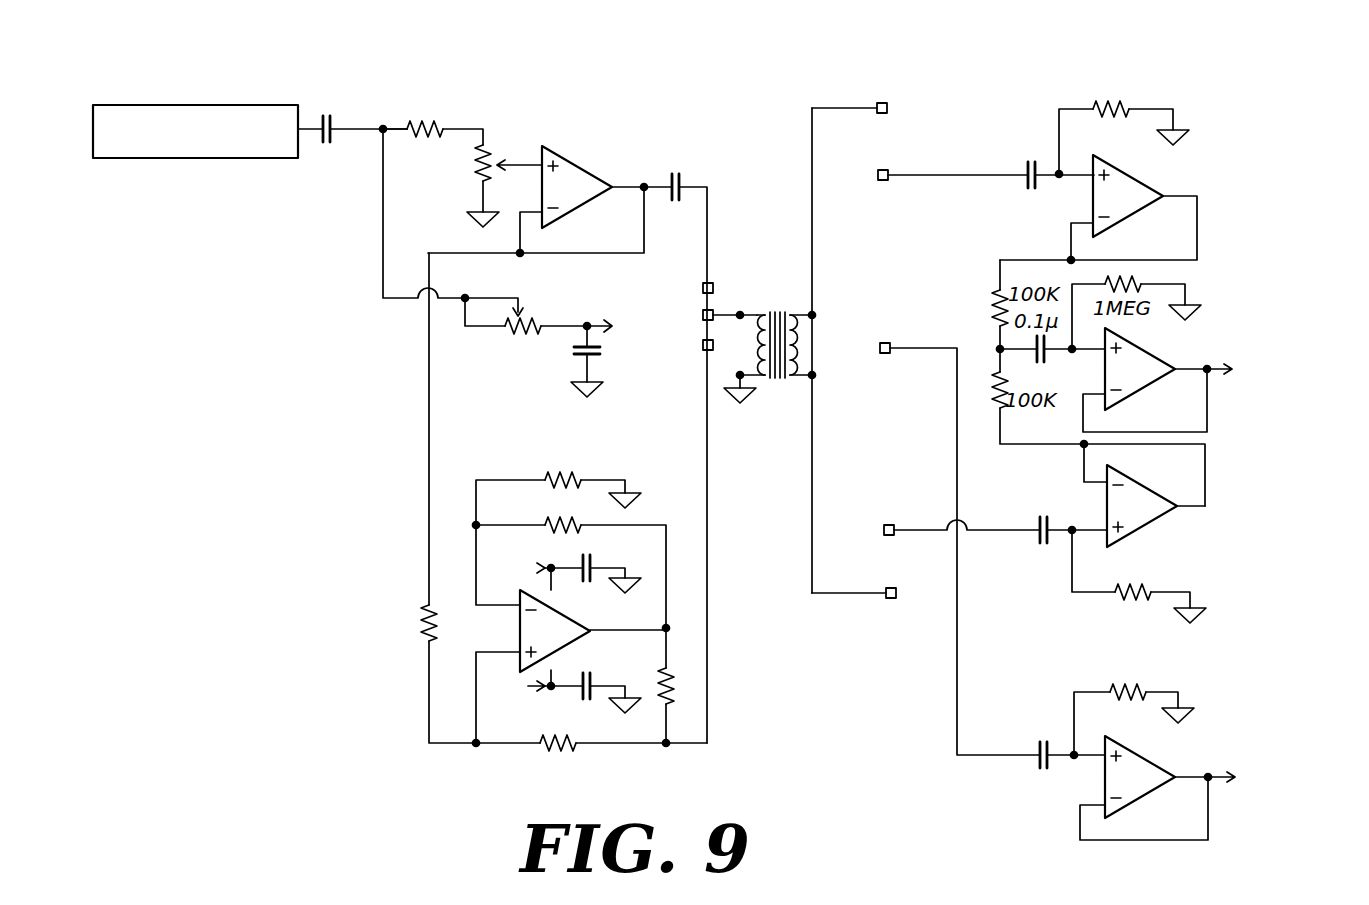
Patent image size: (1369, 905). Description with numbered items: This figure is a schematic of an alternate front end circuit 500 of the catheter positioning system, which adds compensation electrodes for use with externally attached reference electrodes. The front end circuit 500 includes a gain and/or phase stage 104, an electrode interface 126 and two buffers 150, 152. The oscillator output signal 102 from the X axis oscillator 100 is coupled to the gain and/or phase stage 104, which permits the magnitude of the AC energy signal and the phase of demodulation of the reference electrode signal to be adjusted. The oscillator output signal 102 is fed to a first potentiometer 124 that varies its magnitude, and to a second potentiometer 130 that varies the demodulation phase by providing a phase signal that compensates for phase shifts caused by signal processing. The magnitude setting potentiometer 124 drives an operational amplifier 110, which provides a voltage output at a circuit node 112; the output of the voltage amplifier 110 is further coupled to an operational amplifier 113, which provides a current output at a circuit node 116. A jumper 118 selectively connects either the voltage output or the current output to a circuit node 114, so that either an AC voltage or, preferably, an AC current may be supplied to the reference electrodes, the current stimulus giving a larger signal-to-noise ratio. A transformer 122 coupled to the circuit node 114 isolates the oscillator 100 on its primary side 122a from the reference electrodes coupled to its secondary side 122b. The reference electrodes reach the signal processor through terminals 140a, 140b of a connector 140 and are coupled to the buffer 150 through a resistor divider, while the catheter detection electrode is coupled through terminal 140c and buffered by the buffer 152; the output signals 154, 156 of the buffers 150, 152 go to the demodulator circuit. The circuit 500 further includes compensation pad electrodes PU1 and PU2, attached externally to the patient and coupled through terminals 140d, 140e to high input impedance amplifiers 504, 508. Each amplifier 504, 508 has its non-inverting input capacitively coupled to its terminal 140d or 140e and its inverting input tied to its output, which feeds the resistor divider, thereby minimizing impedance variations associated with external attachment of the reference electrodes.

The X axis oscillator 100 is at (213, 104).
The oscillator output signal 102 is at (314, 139).
The gain and/or phase stage 104 is at (368, 333).
The operational amplifier 110 is at (582, 178).
The circuit node 112 is at (711, 290).
The operational amplifier 113 is at (562, 621).
The circuit node 114 is at (711, 312).
The circuit node 116 is at (703, 345).
The jumper 118 is at (695, 311).
The transformer 122 is at (798, 301).
The primary side 122a is at (758, 312).
The secondary side 122b is at (800, 313).
The first potentiometer 124 is at (503, 160).
The electrode interface 126 is at (925, 80).
The second potentiometer 130 is at (531, 313).
The connector 140 is at (867, 653).
The terminal 140a is at (878, 113).
The terminal 140b is at (896, 587).
The terminal 140c is at (888, 340).
The terminal 140d is at (878, 180).
The terminal 140e is at (884, 524).
The buffer 150 is at (1143, 345).
The buffer 152 is at (1138, 752).
The output signal 154 is at (1190, 363).
The output signal 156 is at (1186, 772).
The front end circuit 500 is at (793, 45).
The amplifier 504 is at (1135, 182).
The amplifier 508 is at (1150, 498).